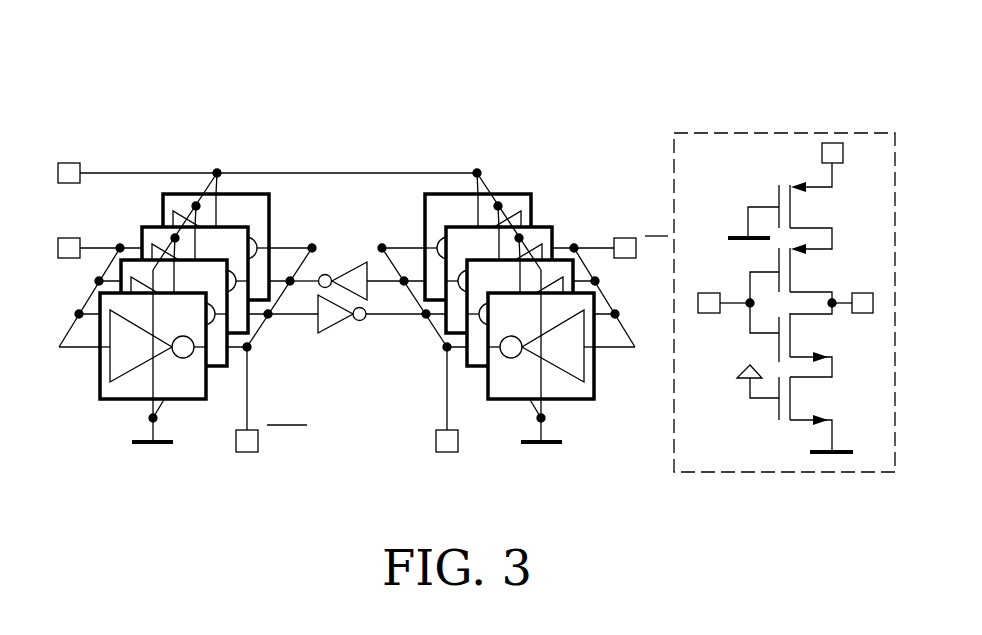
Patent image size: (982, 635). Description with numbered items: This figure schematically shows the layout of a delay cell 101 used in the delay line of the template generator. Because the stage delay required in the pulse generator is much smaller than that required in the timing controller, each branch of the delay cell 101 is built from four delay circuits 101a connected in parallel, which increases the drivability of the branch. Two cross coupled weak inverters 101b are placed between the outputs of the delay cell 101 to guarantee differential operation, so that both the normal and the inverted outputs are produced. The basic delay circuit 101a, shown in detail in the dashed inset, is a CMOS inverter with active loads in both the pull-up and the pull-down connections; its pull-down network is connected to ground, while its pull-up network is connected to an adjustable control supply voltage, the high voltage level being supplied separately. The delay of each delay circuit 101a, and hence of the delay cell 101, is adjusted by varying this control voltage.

The delay cell 101 is at (310, 138).
The delay circuit 101a is at (175, 227).
The cross coupled weak inverter 101b is at (347, 334).